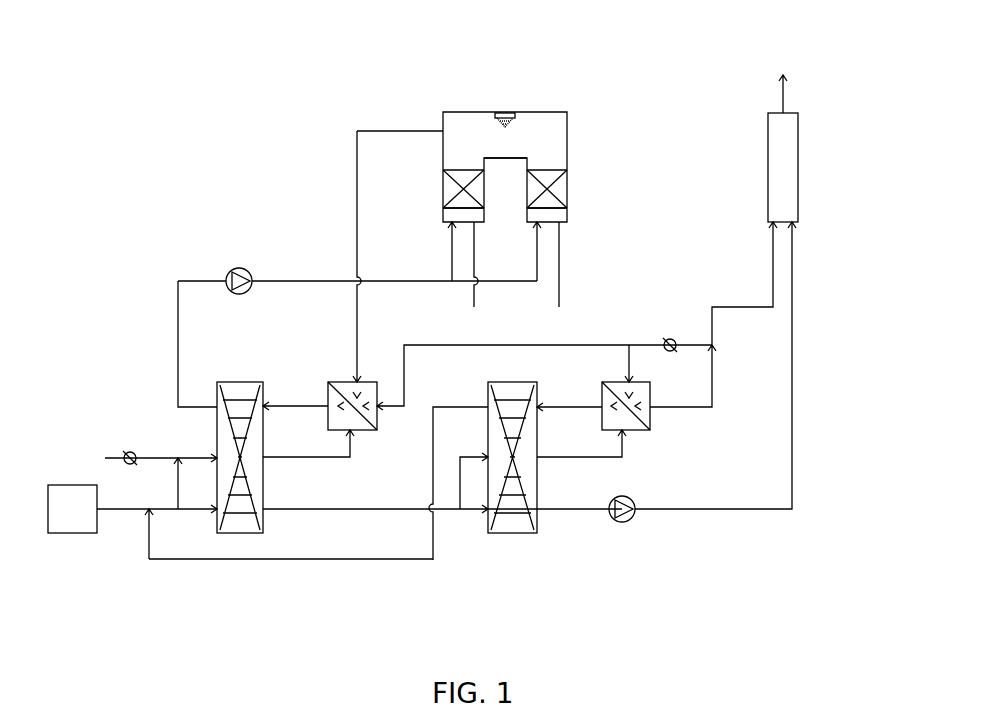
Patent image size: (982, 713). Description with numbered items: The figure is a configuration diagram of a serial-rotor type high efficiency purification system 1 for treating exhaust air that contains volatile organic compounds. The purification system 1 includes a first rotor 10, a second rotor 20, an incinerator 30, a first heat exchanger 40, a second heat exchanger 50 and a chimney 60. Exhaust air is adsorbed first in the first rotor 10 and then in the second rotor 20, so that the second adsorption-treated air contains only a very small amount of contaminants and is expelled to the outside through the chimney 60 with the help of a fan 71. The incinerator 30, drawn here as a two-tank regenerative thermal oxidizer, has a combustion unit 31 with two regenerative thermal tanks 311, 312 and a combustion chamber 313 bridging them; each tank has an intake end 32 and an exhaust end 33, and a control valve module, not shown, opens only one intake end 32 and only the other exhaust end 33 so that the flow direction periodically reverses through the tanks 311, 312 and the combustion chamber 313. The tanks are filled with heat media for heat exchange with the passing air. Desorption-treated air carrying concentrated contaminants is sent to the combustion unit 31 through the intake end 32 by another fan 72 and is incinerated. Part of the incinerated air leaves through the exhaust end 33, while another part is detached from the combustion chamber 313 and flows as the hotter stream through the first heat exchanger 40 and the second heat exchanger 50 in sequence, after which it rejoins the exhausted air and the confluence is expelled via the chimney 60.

The purification system 1 is at (120, 98).
The first rotor 10 is at (264, 483).
The second rotor 20 is at (538, 483).
The incinerator 30 is at (546, 130).
The combustion unit 31 is at (646, 88).
The regenerative thermal tank 311 is at (480, 189).
The regenerative thermal tank 312 is at (568, 187).
The combustion chamber 313 is at (543, 124).
The intake end 32 is at (445, 206).
The exhaust end 33 is at (483, 207).
The first heat exchanger 40 is at (367, 432).
The second heat exchanger 50 is at (641, 432).
The chimney 60 is at (794, 167).
The fan 71 is at (622, 523).
The fan 72 is at (241, 268).